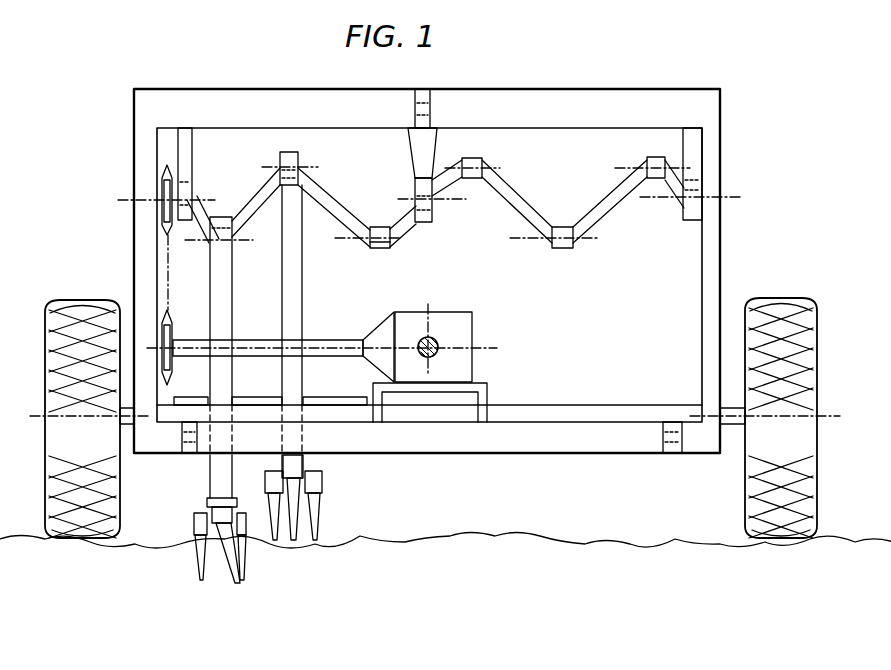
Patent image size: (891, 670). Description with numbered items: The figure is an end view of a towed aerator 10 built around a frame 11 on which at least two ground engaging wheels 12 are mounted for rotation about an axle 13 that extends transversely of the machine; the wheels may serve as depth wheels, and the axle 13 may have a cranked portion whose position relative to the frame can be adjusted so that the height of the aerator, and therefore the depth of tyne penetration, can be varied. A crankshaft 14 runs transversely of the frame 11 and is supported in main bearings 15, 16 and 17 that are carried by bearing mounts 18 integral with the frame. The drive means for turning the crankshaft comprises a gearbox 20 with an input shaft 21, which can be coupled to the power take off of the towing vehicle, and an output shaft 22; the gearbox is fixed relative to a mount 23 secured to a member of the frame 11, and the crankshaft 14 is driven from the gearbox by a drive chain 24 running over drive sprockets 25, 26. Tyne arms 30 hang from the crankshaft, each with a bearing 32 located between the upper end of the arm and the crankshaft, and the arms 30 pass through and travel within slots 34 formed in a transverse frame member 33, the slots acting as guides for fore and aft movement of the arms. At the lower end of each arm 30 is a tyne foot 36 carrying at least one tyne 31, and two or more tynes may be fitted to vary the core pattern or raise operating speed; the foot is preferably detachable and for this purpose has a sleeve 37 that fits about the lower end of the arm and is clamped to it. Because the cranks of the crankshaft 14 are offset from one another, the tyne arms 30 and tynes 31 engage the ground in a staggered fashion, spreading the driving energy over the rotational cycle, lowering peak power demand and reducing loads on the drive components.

The aerator 10 is at (748, 80).
The frame 11 is at (703, 115).
The ground engaging wheels 12 is at (66, 302).
The axle 13 is at (733, 424).
The crankshaft 14 is at (608, 216).
The main bearing 15 is at (183, 196).
The main bearing 16 is at (428, 223).
The main bearing 17 is at (686, 223).
The bearing mounts 18 is at (186, 146).
The gearbox 20 is at (463, 320).
The input shaft 21 is at (438, 343).
The output shaft 22 is at (340, 344).
The mount 23 is at (490, 390).
The drive chain 24 is at (170, 284).
The drive sprocket 25 is at (162, 190).
The drive sprocket 26 is at (170, 368).
The tyne arms 30 is at (291, 271).
The tynes 31 is at (201, 574).
The bearing 32 is at (293, 163).
The transverse frame member 33 is at (320, 397).
The slots 34 is at (281, 396).
The tyne foot 36 is at (181, 516).
The sleeve 37 is at (222, 528).